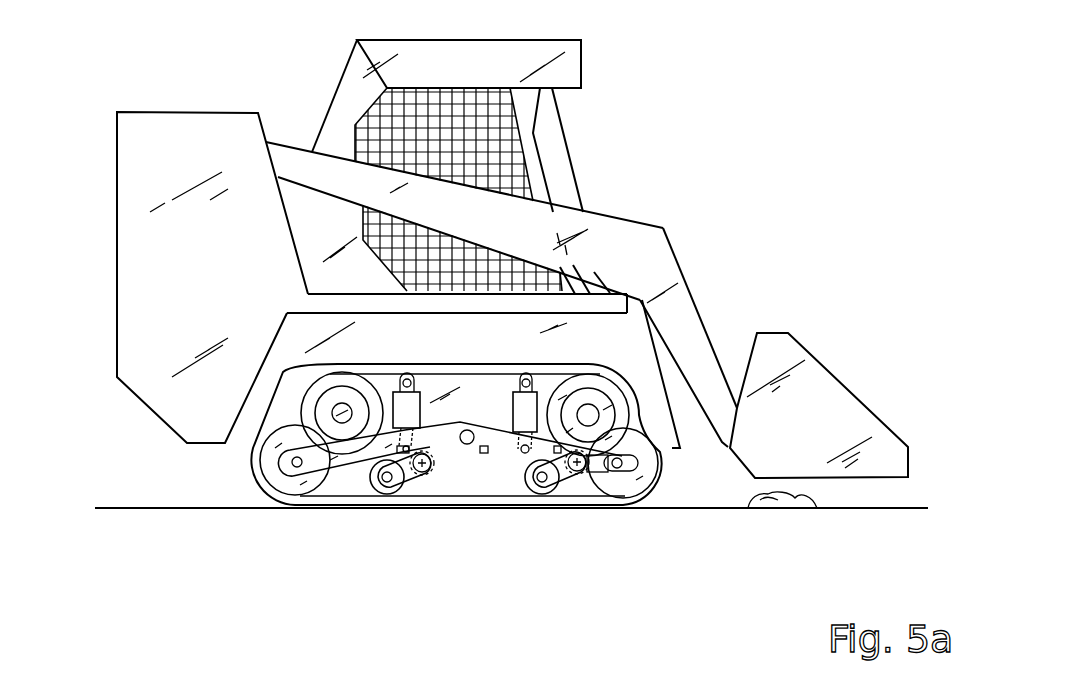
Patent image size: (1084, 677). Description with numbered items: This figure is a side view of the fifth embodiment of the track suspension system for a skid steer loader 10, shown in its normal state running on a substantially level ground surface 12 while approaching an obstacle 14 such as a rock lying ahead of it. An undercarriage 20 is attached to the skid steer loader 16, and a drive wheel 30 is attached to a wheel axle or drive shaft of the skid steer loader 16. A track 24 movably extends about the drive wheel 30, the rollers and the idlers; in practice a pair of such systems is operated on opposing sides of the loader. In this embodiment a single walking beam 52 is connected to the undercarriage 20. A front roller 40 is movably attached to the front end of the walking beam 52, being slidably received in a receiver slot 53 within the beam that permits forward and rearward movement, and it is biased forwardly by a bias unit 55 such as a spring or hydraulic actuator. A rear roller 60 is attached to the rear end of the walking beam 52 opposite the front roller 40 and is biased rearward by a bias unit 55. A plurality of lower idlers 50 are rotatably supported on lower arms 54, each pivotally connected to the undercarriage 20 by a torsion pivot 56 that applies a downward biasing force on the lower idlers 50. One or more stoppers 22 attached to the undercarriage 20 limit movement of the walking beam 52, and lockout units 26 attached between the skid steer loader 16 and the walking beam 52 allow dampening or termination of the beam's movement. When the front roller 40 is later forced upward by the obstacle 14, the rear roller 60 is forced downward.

The track suspension system for a skid steer loader 10 is at (657, 167).
The ground surface 12 is at (113, 507).
The obstacle 14 is at (817, 505).
The skid steer loader 16 is at (325, 101).
The undercarriage 20 is at (467, 428).
The stopper 22 is at (484, 446).
The track 24 is at (252, 462).
The lockout unit 26 is at (394, 393).
The drive wheel 30 is at (320, 393).
The front roller 40 is at (683, 470).
The lower idler 50 is at (397, 490).
The walking beam 52 is at (330, 470).
The receiver slot 53 is at (662, 473).
The lower arm 54 is at (423, 468).
The bias unit 55 is at (590, 470).
The torsion pivot 56 is at (517, 477).
The rear roller 60 is at (262, 485).